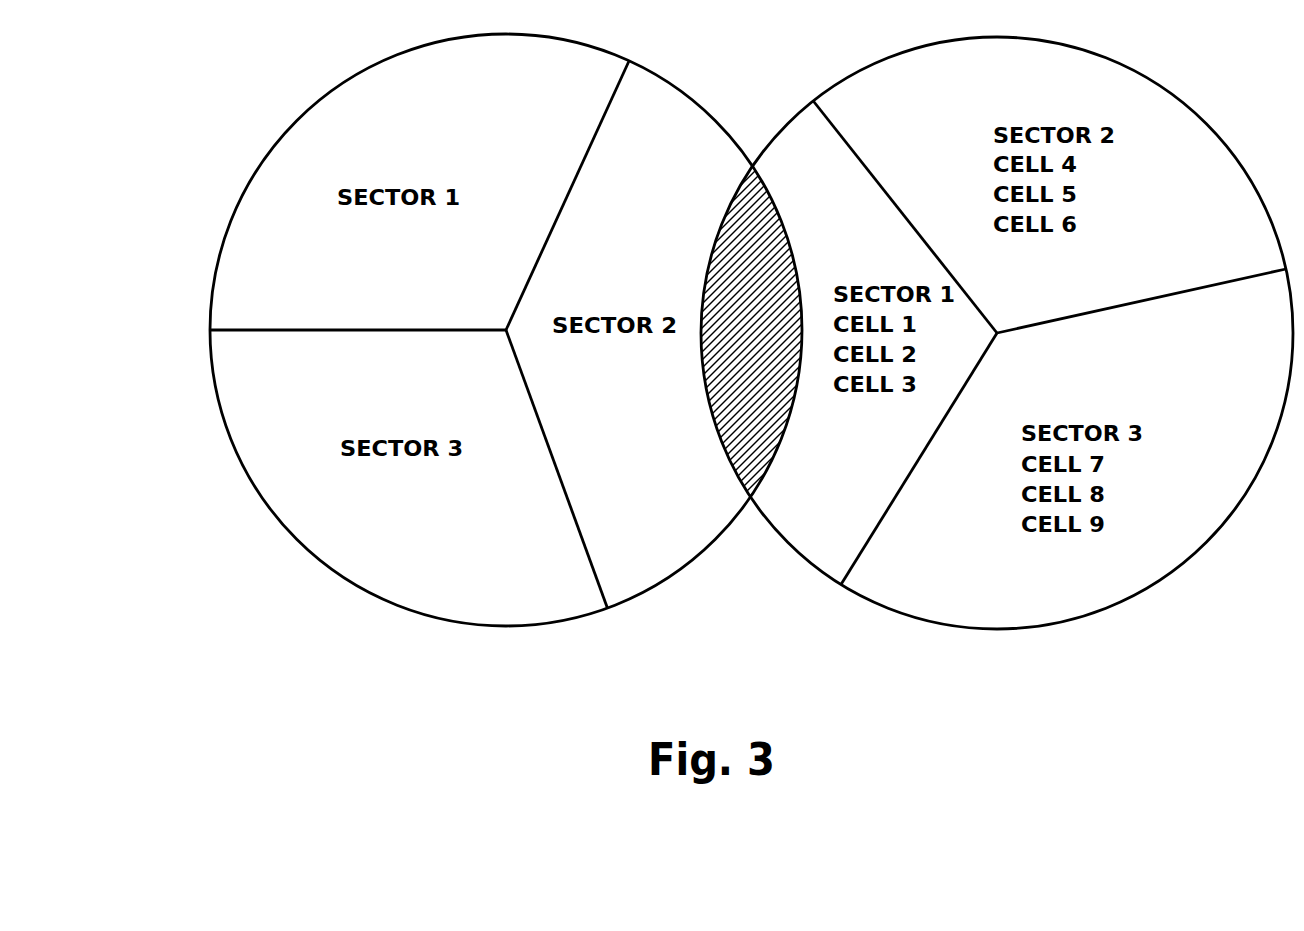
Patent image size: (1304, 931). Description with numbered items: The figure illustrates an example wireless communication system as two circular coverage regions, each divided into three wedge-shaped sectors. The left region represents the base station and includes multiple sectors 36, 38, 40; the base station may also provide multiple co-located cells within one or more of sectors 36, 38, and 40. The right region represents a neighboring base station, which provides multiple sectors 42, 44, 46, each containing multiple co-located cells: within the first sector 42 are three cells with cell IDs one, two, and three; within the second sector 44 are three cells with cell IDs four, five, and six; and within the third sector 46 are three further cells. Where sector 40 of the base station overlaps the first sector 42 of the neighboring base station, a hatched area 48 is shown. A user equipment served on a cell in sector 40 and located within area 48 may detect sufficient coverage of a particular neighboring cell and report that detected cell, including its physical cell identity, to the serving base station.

The sector 36 is at (255, 318).
The sector 38 is at (559, 600).
The sector 40 is at (654, 118).
The first sector 42 is at (847, 562).
The second sector 44 is at (870, 116).
The third sector 46 is at (1284, 312).
The area 48 is at (711, 408).